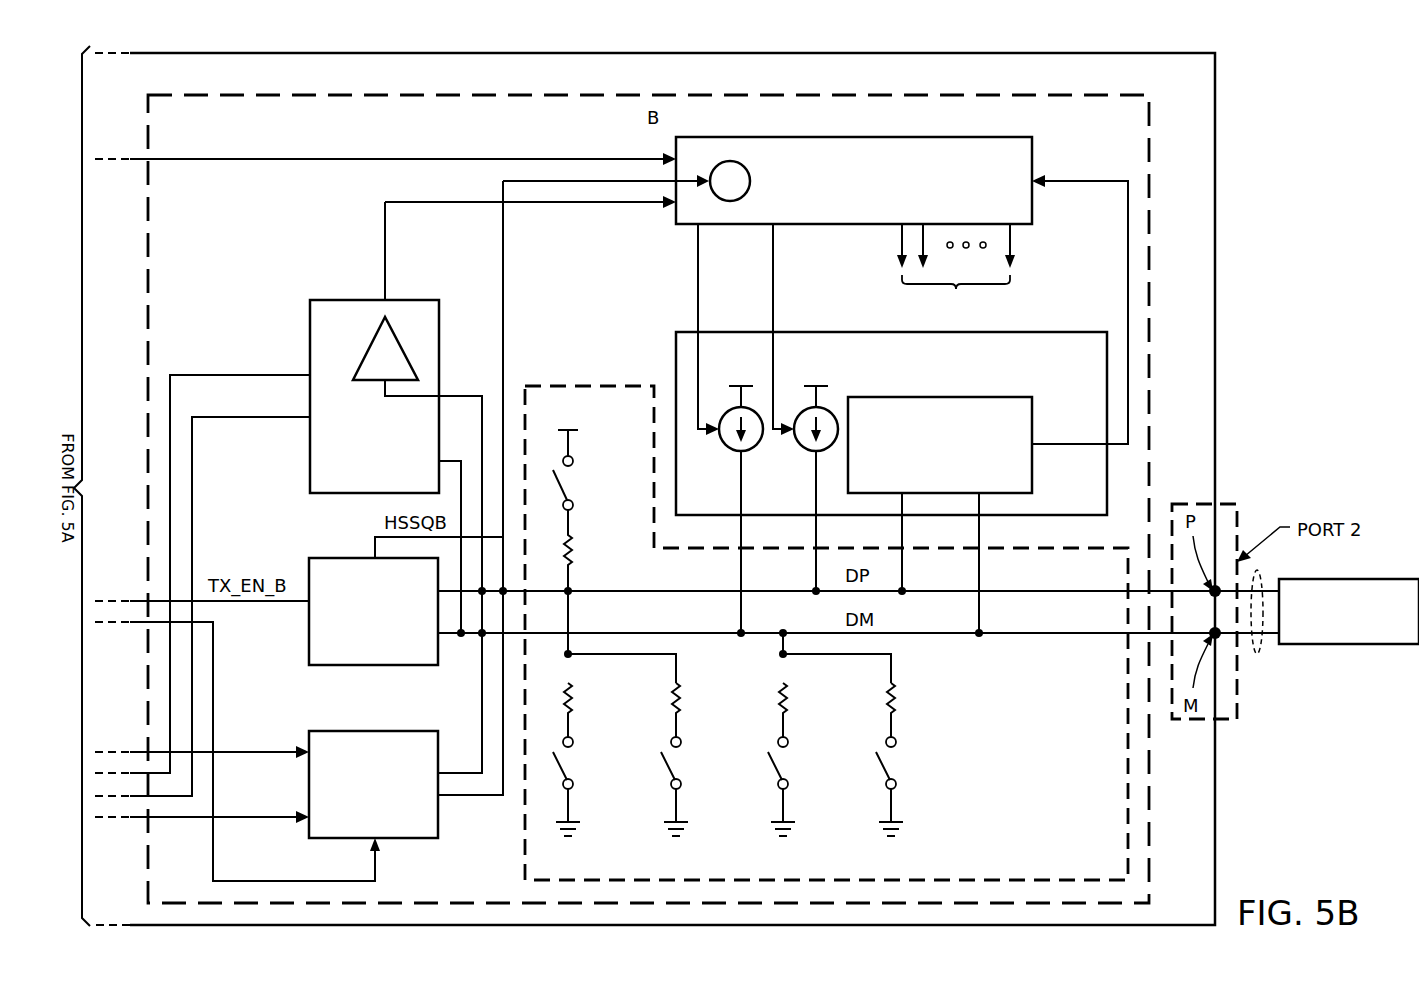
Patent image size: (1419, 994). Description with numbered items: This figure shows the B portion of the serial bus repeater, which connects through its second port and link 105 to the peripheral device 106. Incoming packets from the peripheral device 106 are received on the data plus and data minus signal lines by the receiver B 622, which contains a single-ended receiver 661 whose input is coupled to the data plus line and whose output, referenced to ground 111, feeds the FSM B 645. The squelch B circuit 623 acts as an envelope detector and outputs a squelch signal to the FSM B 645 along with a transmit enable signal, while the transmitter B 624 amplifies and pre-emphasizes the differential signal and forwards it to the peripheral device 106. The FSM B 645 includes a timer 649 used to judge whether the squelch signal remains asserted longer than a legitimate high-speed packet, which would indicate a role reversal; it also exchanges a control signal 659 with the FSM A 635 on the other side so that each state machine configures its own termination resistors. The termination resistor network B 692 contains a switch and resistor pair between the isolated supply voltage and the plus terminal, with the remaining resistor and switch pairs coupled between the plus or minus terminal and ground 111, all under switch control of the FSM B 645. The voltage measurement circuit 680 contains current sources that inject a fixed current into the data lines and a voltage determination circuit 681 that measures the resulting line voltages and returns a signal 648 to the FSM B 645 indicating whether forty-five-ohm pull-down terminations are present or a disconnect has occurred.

The control signal 659 is at (345, 158).
The FSM B 645 is at (1034, 154).
The timer 649 is at (752, 192).
The FSM A 635 is at (956, 272).
The output signal 648 is at (1128, 308).
The receiver B 622 is at (345, 299).
The single-ended receiver 661 is at (367, 346).
The squelch B circuit 623 is at (405, 667).
The transmitter B 624 is at (405, 840).
The voltage measurement circuit 680 is at (840, 322).
The voltage determination circuit 681 is at (1034, 462).
The termination resistor network B 692 is at (826, 601).
The ground 111 is at (582, 826).
The link 105 is at (1260, 654).
The peripheral device 106 is at (1348, 646).